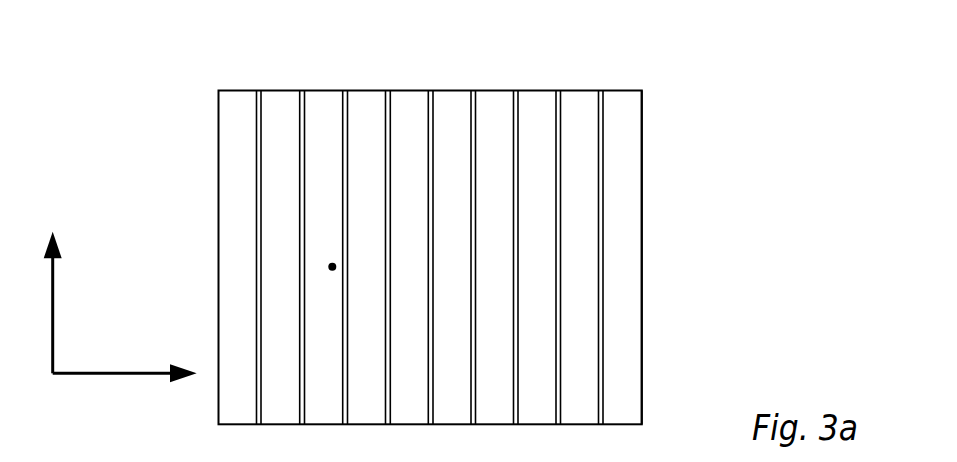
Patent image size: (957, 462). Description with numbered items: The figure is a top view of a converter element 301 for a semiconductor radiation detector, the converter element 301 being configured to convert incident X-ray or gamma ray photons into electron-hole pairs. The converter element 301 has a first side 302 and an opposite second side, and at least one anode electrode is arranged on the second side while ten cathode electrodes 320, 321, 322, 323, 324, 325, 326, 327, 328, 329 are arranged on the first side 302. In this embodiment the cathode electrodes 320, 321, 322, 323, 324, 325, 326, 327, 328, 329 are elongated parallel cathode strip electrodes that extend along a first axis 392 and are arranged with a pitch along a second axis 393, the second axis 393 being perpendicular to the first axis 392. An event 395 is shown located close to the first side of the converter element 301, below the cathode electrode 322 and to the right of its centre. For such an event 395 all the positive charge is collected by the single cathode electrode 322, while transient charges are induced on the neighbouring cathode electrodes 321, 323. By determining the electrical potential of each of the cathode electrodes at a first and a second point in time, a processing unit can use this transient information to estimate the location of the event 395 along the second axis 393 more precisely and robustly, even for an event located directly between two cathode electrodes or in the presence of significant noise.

The converter element 301 is at (798, 66).
The first side 302 is at (642, 257).
The cathode electrode 320 is at (233, 90).
The cathode electrode 321 is at (278, 90).
The cathode electrode 322 is at (331, 90).
The cathode electrode 323 is at (353, 90).
The cathode electrode 324 is at (421, 90).
The cathode electrode 325 is at (445, 90).
The cathode electrode 326 is at (493, 90).
The cathode electrode 327 is at (542, 90).
The cathode electrode 328 is at (578, 90).
The cathode electrode 329 is at (625, 90).
The first axis 392 is at (53, 312).
The second axis 393 is at (97, 373).
The event 395 is at (332, 267).